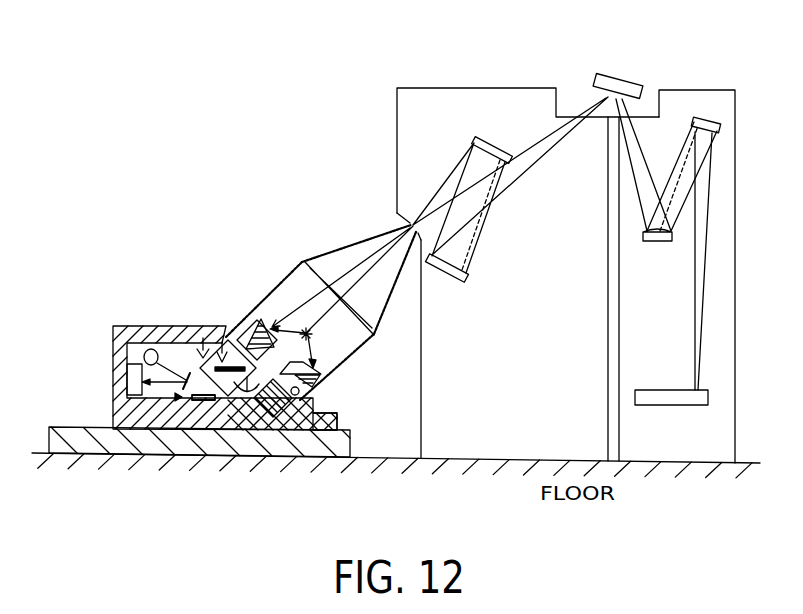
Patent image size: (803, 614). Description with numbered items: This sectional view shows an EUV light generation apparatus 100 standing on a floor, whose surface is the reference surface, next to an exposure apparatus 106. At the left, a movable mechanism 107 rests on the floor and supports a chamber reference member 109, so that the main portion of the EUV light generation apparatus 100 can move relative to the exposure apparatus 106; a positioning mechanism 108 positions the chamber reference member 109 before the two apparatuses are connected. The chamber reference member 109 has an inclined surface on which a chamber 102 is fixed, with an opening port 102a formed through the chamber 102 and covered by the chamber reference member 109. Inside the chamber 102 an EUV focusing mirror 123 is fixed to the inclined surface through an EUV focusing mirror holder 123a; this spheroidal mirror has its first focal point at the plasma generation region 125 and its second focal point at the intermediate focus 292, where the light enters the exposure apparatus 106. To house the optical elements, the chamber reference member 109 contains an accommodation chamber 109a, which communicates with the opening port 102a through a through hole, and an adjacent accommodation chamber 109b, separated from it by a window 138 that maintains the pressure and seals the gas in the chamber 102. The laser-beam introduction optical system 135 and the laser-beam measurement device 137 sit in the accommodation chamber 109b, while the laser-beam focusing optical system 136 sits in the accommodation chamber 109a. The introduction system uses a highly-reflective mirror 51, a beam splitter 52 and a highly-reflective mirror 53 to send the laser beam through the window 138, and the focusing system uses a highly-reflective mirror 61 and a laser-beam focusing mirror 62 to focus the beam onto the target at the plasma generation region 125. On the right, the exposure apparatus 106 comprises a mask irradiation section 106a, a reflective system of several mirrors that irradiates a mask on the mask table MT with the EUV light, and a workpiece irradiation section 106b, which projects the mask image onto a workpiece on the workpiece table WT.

The EUV light generation apparatus 100 is at (250, 190).
The chamber 102 is at (356, 236).
The opening port 102a is at (258, 318).
The exposure apparatus 106 is at (551, 46).
The mask irradiation section 106a is at (465, 88).
The workpiece irradiation section 106b is at (697, 90).
The movable mechanism 107 is at (62, 448).
The positioning mechanism 108 is at (338, 421).
The chamber reference member 109 is at (222, 340).
The accommodation chamber 109a is at (203, 338).
The accommodation chamber 109b is at (183, 373).
The EUV focusing mirror 123 is at (320, 370).
The EUV focusing mirror holder 123a is at (303, 390).
The plasma generation region 125 is at (279, 330).
The laser-beam introduction optical system 135 is at (178, 400).
The laser-beam focusing optical system 136 is at (313, 415).
The laser-beam measurement device 137 is at (125, 326).
The window 138 is at (236, 392).
The intermediate focus 292 is at (414, 218).
The highly-reflective mirror 51 is at (141, 364).
The beam splitter 52 is at (168, 345).
The highly-reflective mirror 53 is at (208, 400).
The highly-reflective mirror 61 is at (243, 330).
The laser-beam focusing mirror 62 is at (266, 404).
The mask table MT is at (618, 73).
The workpiece table WT is at (670, 406).